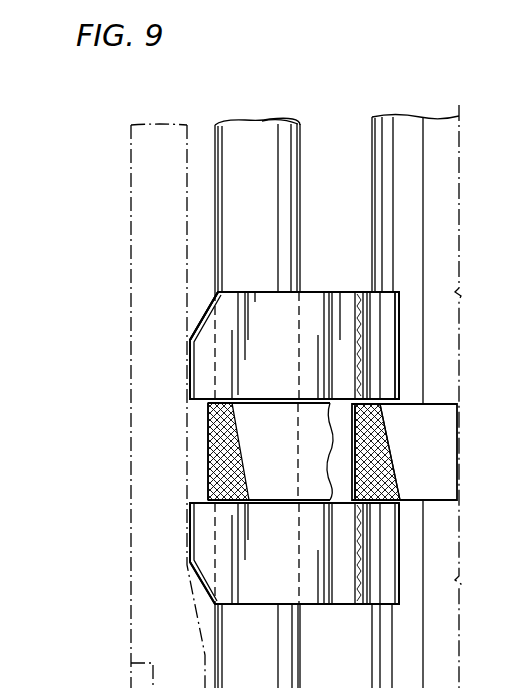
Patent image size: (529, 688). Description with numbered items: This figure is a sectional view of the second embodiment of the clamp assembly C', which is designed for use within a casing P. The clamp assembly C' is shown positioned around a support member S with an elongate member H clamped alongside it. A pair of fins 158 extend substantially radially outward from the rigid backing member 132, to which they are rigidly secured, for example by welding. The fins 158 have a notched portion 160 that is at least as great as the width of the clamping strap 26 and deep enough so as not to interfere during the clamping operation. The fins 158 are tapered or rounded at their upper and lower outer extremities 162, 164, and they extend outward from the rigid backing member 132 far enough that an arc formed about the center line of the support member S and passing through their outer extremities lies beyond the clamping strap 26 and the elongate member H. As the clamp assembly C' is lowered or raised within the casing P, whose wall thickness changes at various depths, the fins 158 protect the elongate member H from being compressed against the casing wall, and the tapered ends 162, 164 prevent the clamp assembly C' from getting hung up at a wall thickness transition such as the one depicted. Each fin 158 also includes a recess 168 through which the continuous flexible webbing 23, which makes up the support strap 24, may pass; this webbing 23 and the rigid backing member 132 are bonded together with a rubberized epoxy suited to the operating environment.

The casing P is at (131, 172).
The elongate member H is at (285, 181).
The support member S is at (450, 178).
The clamp assembly C' is at (153, 322).
The fins 158 is at (202, 346).
The upper outer extremity 162 is at (195, 323).
The lower outer extremity 164 is at (192, 577).
The notched portion 160 is at (200, 505).
The clamping strap 26 is at (245, 445).
The second support strap 24 is at (445, 426).
The recess 168 is at (357, 455).
The continuous flexible webbing 23 is at (436, 408).
The rigid backing member 132 is at (405, 326).